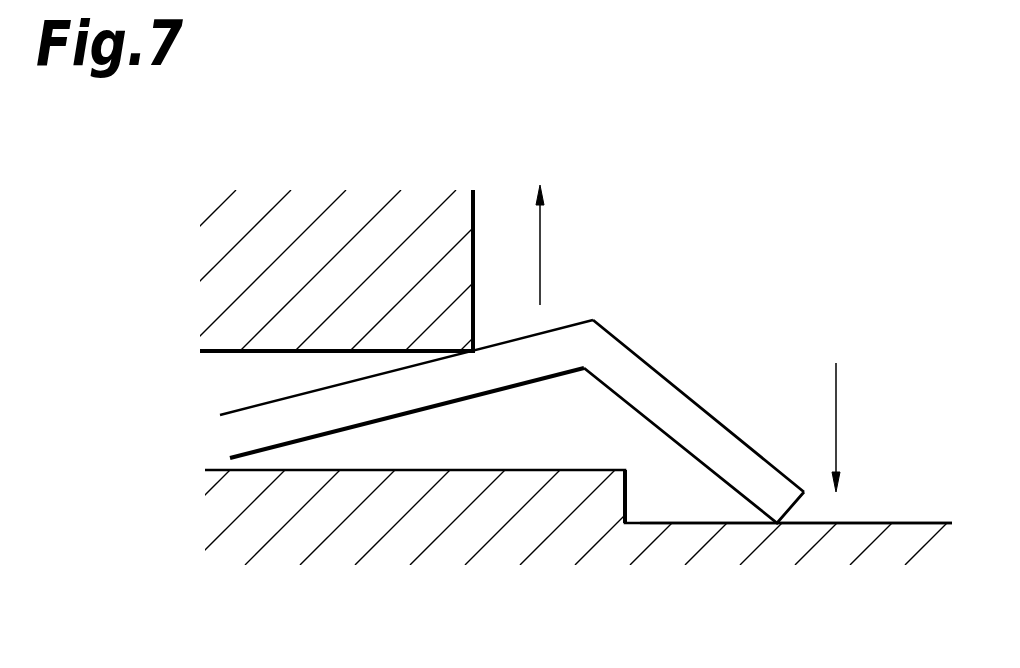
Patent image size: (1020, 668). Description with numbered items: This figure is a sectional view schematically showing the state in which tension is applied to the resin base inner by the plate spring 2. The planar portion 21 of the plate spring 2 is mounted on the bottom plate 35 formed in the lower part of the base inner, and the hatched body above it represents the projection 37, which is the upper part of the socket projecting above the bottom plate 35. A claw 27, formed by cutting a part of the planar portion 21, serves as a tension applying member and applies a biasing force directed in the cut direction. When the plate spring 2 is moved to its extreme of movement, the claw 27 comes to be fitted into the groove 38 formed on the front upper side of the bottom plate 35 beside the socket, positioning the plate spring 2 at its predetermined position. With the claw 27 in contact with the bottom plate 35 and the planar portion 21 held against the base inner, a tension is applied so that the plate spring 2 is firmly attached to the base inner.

The plate spring 2 is at (512, 426).
The planar portion 21 is at (303, 418).
The claw 27 is at (703, 447).
The bottom plate 35 is at (552, 503).
The projection 37 is at (390, 351).
The groove 38 is at (878, 523).